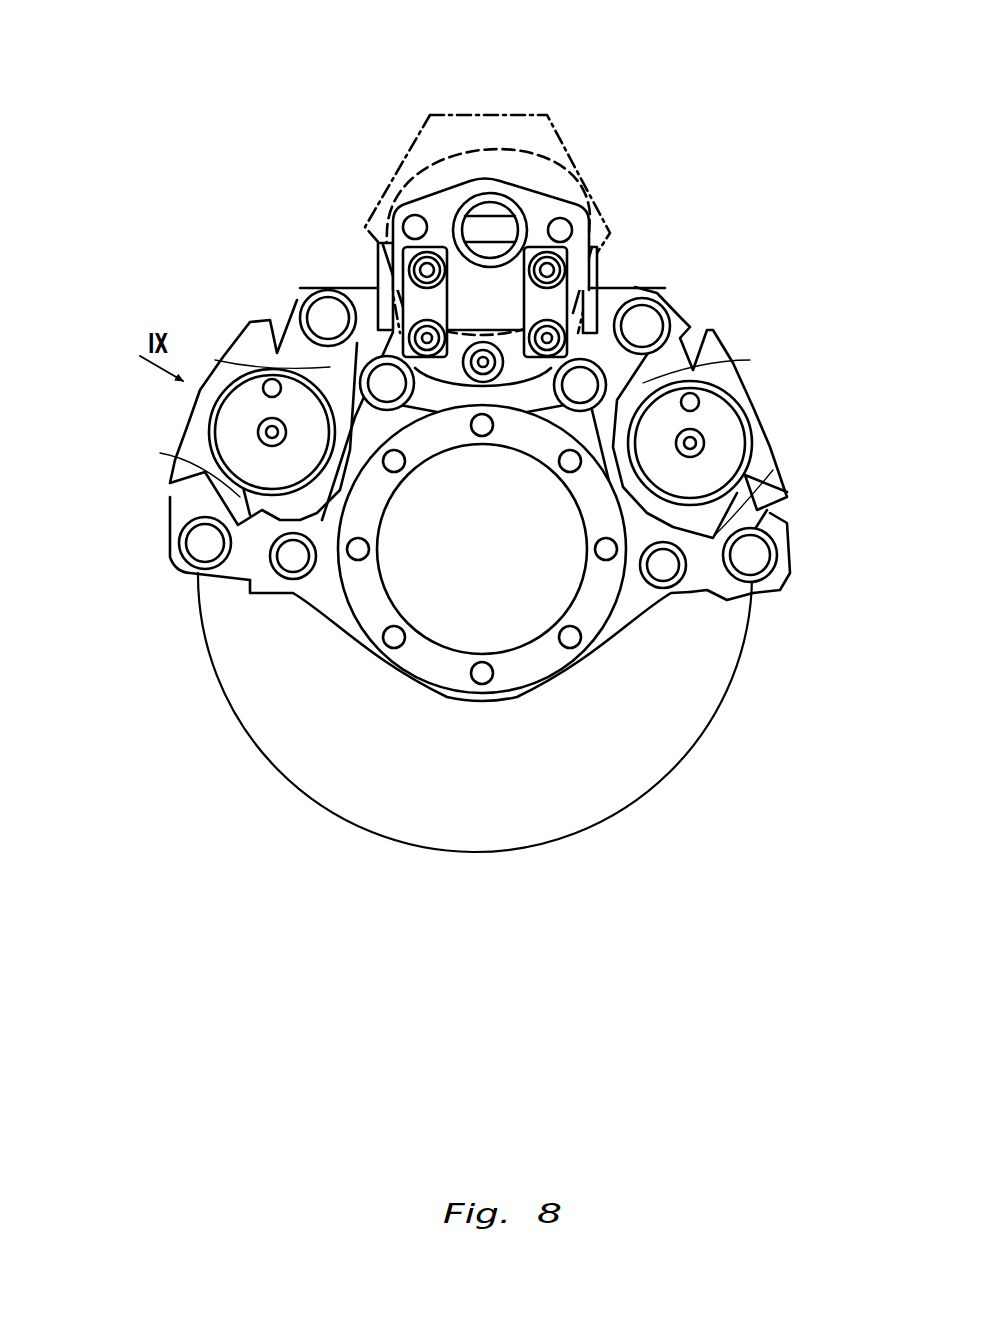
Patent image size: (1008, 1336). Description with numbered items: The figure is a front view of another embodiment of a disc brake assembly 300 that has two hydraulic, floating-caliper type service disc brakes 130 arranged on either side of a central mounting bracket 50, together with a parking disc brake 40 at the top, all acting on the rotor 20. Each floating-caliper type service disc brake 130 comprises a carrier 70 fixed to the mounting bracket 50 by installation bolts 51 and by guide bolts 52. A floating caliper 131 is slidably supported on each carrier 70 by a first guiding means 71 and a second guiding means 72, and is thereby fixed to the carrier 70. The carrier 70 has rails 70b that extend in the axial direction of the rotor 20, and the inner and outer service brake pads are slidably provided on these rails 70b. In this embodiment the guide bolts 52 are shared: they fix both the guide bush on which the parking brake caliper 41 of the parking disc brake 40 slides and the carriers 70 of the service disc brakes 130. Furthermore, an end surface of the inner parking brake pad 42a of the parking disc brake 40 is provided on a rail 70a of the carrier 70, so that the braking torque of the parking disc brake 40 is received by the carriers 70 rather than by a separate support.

The disc brake assembly 300 is at (333, 58).
The rotor 20 is at (548, 802).
The parking disc brake 40 is at (612, 262).
The parking brake caliper 41 is at (390, 282).
The inner parking brake pad 42a is at (597, 293).
The mounting bracket 50 is at (633, 533).
The installation bolts 51 is at (297, 556).
The guide bolts 52 is at (390, 390).
The carrier 70 is at (237, 578).
The rails 70a is at (378, 300).
The rails 70b is at (215, 360).
The first guiding means 71 is at (318, 303).
The second guiding means 72 is at (203, 548).
The floating-caliper type service disc brake 130 is at (238, 324).
The floating caliper 131 is at (195, 432).